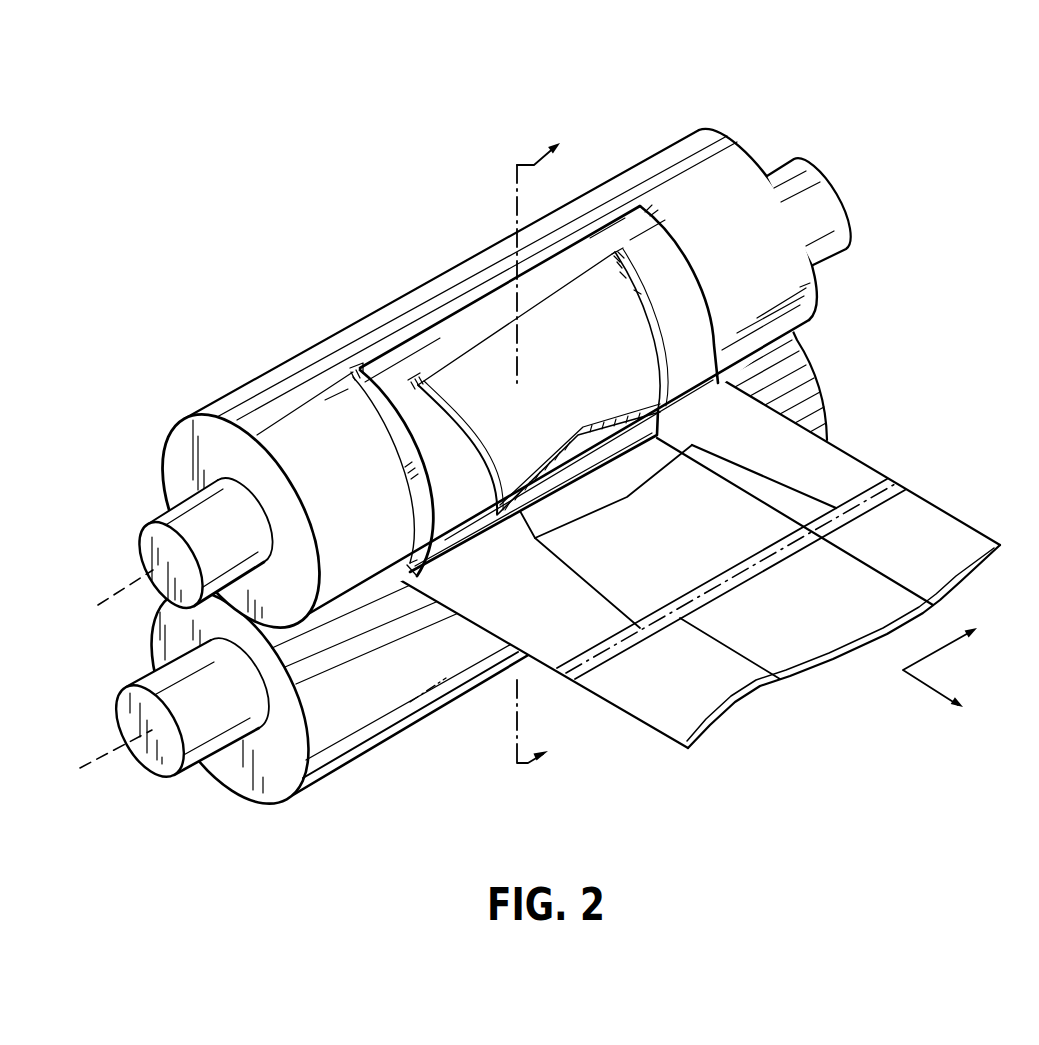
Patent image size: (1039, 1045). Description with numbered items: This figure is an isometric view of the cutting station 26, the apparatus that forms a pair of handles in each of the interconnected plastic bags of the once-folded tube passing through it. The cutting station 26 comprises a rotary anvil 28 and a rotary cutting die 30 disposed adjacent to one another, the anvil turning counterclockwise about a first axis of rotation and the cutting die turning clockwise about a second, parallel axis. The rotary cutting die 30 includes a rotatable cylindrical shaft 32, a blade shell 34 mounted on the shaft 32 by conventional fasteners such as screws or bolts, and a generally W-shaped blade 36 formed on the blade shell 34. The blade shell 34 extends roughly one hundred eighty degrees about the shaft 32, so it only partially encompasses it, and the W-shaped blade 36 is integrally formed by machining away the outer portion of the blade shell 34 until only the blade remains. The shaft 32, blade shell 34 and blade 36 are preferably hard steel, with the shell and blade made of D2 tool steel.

The cutting station 26 is at (525, 444).
The rotary anvil 28 is at (118, 726).
The rotary cutting die 30 is at (146, 522).
The cylindrical shaft 32 is at (172, 458).
The blade shell 34 is at (627, 226).
The W-shaped blade 36 is at (422, 376).